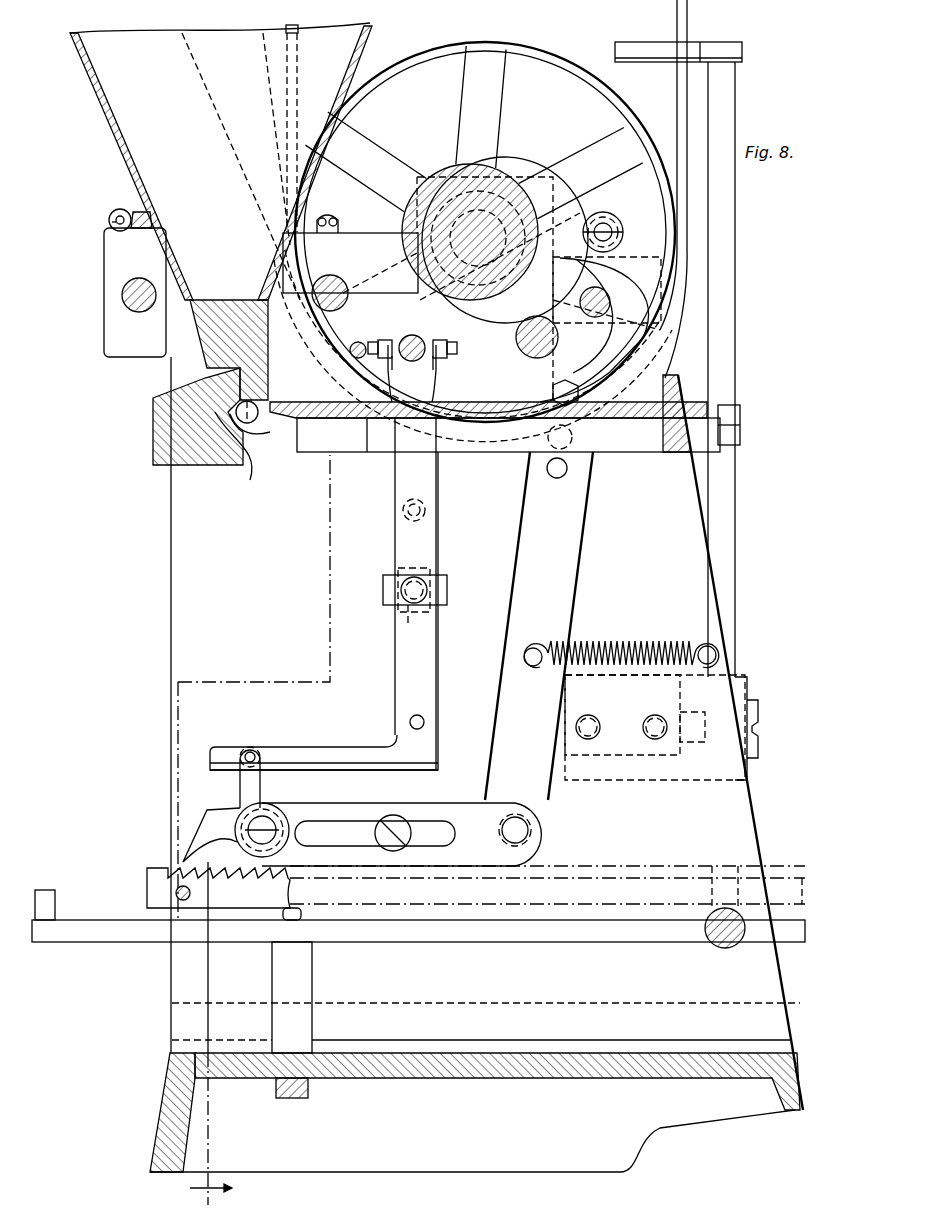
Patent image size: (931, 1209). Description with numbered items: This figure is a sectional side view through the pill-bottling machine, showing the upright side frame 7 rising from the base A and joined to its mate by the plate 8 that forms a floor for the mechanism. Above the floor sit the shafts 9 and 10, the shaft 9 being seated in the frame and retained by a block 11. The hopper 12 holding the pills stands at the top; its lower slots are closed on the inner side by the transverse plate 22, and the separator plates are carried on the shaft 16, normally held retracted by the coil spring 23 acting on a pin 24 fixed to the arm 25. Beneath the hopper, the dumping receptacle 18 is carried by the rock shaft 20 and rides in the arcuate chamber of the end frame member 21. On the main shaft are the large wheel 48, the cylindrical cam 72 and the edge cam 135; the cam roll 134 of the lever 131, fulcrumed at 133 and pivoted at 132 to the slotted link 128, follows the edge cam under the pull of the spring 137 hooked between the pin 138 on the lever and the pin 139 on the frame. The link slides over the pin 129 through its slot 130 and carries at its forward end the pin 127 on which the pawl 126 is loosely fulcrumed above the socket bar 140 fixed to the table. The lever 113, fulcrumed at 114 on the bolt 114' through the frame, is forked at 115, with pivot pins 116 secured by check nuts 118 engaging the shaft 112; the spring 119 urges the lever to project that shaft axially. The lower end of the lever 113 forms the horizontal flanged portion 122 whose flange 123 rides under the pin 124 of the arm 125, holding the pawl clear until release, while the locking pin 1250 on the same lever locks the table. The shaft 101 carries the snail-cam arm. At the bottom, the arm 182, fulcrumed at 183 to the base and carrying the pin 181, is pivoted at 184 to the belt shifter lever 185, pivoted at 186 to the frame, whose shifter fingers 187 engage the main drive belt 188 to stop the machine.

The hopper 12 is at (221, 161).
The coil spring 23 is at (143, 212).
The arm 25 is at (118, 210).
The pin 24 is at (112, 221).
The shaft 16 is at (125, 300).
The transverse plate 22 is at (258, 350).
The end frame member 21 is at (152, 420).
The rock shaft 20 is at (255, 425).
The dumping receptacle 18 is at (236, 459).
The wheel 48 is at (512, 46).
The cylindrical cam 72 is at (472, 166).
The edge cam 135 is at (530, 160).
The shaft 9 is at (415, 175).
The cam roll 134 is at (606, 213).
The block 11 is at (620, 278).
The main drive belt 188 is at (676, 22).
The shifter fingers 187 is at (650, 56).
The side frame 7 is at (690, 522).
The belt shifter lever 185 is at (740, 582).
The pivot 186 is at (758, 715).
The plate 8 is at (642, 440).
The shaft 112 is at (432, 362).
The forked portion 115 is at (385, 340).
The pivot pins 116 is at (458, 347).
The check nuts 118 is at (452, 355).
The shaft 101 is at (356, 342).
The shaft 10 is at (533, 358).
The fulcrum 133 is at (575, 420).
The lever 113 is at (432, 472).
The spring 119 is at (428, 505).
The fulcrum 114 is at (434, 582).
The bolt 114' is at (415, 624).
The horizontal flanged portion 122 is at (330, 745).
The locking pin 1250 is at (425, 716).
The flange 123 is at (272, 768).
The pin 124 is at (250, 750).
The arm 125 is at (256, 786).
The pawl 126 is at (212, 812).
The pin 127 is at (282, 818).
The pin 129 is at (405, 818).
The slot 130 is at (375, 833).
The slotted link 128 is at (363, 812).
The lever 131 is at (572, 570).
The pivot 132 is at (522, 832).
The spring 137 is at (606, 636).
The pin 138 is at (532, 667).
The pin 139 is at (716, 646).
The socket bar 140 is at (160, 880).
The arm 182 is at (418, 904).
The pin 181 is at (50, 906).
The pivot 184 is at (738, 944).
The fulcrum 183 is at (314, 968).
The base A is at (475, 1087).